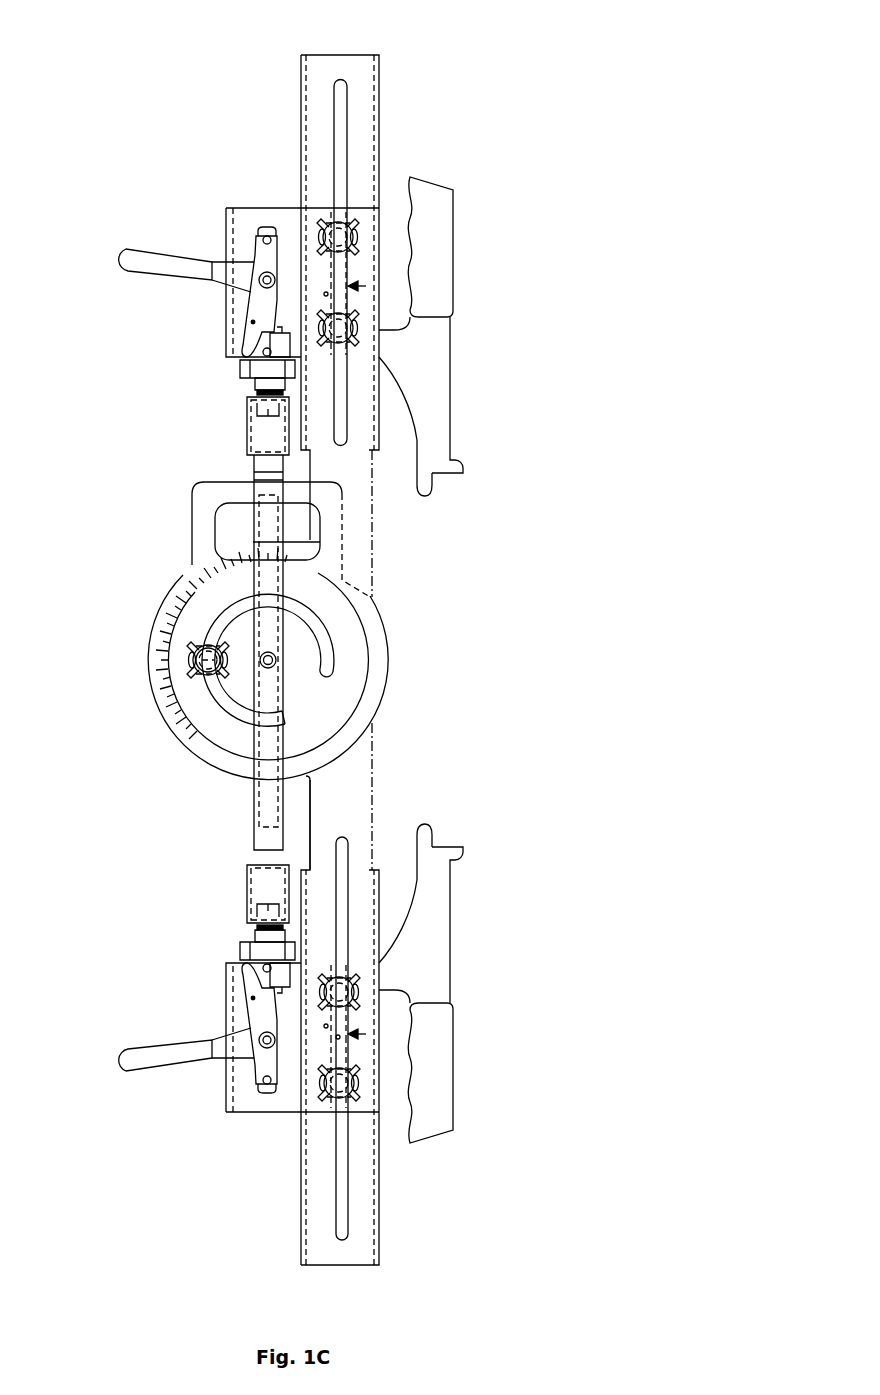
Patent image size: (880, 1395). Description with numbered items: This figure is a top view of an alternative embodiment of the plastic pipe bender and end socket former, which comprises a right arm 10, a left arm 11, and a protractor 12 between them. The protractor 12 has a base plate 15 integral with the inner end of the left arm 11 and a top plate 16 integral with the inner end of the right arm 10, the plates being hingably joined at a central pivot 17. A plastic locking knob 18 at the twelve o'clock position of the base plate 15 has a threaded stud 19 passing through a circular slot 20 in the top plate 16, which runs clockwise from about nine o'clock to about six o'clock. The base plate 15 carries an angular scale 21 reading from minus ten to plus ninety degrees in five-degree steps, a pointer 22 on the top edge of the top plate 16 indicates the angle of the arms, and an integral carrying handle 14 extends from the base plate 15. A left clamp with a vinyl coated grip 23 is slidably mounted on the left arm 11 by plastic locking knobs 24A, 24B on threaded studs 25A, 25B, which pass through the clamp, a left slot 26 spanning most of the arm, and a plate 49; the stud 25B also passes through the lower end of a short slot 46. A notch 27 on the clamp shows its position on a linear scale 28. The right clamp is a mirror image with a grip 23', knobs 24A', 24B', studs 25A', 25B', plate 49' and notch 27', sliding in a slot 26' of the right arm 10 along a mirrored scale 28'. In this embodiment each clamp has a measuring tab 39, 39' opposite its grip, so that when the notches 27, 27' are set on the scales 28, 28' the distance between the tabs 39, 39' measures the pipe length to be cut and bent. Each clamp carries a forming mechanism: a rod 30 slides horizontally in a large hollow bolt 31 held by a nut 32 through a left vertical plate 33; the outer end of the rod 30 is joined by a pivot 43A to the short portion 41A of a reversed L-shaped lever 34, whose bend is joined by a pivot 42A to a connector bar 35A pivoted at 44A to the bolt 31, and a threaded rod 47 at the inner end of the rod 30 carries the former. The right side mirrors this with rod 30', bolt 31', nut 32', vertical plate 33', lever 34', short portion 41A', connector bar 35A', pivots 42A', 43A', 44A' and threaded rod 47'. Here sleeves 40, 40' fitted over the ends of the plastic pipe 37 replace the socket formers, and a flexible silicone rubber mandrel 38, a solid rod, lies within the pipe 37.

The right arm 10 is at (368, 465).
The left arm 11 is at (372, 855).
The protractor 12 is at (291, 676).
The carrying handle 14 is at (192, 522).
The base plate 15 is at (390, 652).
The top plate 16 is at (372, 688).
The central pivot 17 is at (278, 668).
The plastic locking knob 18 is at (190, 648).
The threaded stud 19 is at (195, 676).
The circular slot 20 is at (332, 634).
The angular scale 21 is at (192, 587).
The pointer 22 is at (192, 662).
The vinyl coated grip 23 is at (456, 1095).
The grip 23' is at (455, 224).
The plastic locking knob 24A is at (432, 954).
The locking knob 24A' is at (431, 366).
The plastic locking knob 24B is at (432, 1160).
The locking knob 24B' is at (431, 160).
The threaded stud 25A is at (439, 988).
The threaded stud 25A' is at (438, 334).
The threaded stud 25B is at (438, 1073).
The threaded stud 25B' is at (438, 246).
The left slot 26 is at (390, 1048).
The slot 26' is at (381, 273).
The notch 27 is at (440, 1011).
The notch 27' is at (440, 308).
The linear scale 28 is at (434, 1074).
The scale 28' is at (433, 226).
The rod 30 is at (165, 1023).
The rod 30' is at (163, 296).
The hollow bolt 31 is at (379, 985).
The bolt 31' is at (377, 339).
The nut 32 is at (189, 935).
The nut 32' is at (187, 385).
The left vertical plate 33 is at (194, 961).
The right vertical plate 33' is at (192, 358).
The lever 34 is at (154, 1085).
The lever 34' is at (149, 234).
The connector bar 35A is at (147, 1012).
The connector bar 35A' is at (146, 308).
The plastic pipe 37 is at (250, 832).
The flexible silicone rubber mandrel 38 is at (262, 795).
The measuring tab 39 is at (482, 905).
The measuring tab 39' is at (467, 427).
The sleeve 40 is at (191, 894).
The sleeve 40' is at (189, 426).
The short portion 41A is at (207, 1094).
The short portion 41A' is at (202, 227).
The pivot 42A is at (199, 1072).
The pivot 42A' is at (196, 248).
The pivot 43A is at (206, 1160).
The pivot 43A' is at (201, 160).
The pivot 44A is at (213, 982).
The pivot 44A' is at (210, 339).
The short slot 46 is at (336, 1040).
The threaded rod 47 is at (214, 915).
The spring 47' is at (210, 404).
The plate 49 is at (286, 1092).
The plate 49' is at (281, 227).